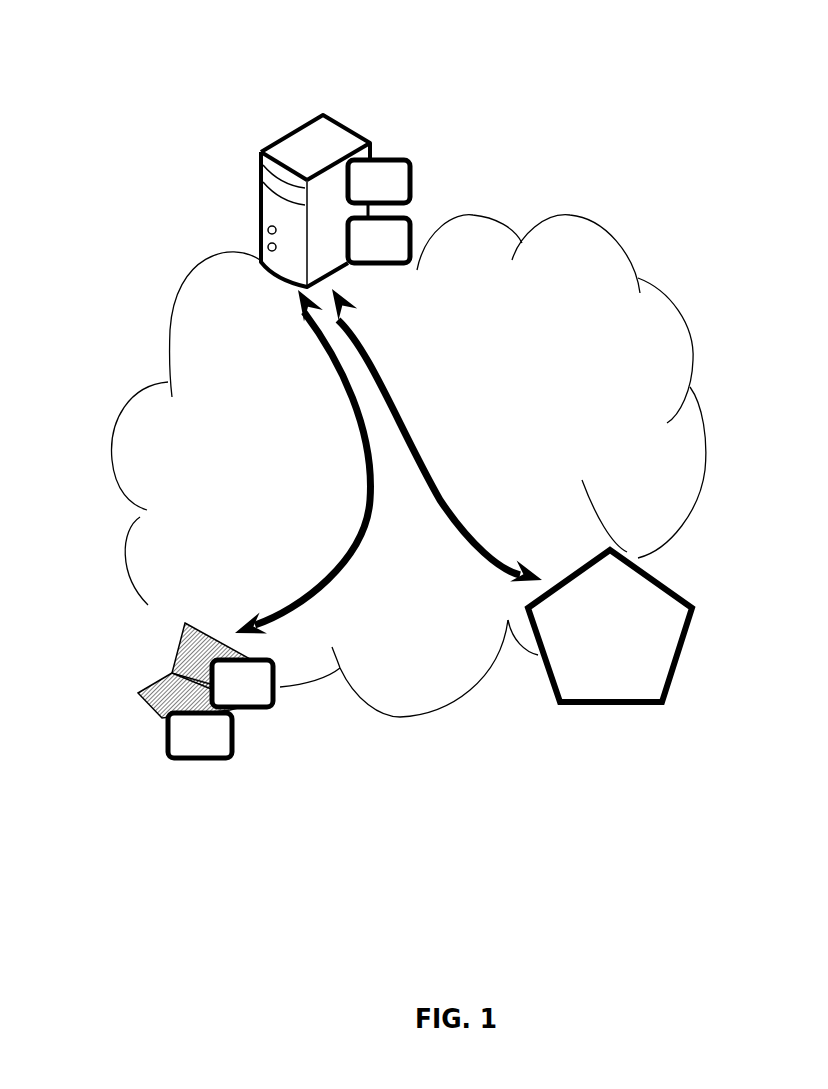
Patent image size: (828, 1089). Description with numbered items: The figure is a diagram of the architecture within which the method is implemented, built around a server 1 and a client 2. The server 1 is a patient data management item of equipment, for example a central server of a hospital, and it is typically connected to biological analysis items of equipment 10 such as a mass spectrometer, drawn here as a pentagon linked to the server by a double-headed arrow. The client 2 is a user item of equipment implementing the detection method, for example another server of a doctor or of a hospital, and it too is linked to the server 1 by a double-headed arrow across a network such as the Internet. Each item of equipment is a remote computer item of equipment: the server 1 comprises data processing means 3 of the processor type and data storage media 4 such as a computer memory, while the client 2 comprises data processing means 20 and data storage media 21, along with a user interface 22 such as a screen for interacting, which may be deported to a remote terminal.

The server 1 is at (325, 110).
The client 2 is at (148, 691).
The data processing means 3 is at (417, 168).
The data storage media 4 is at (417, 245).
The biological analysis items of equipment 10 is at (587, 713).
The data processing means 20 is at (282, 713).
The data storage media 21 is at (230, 757).
The user interface 22 is at (173, 650).